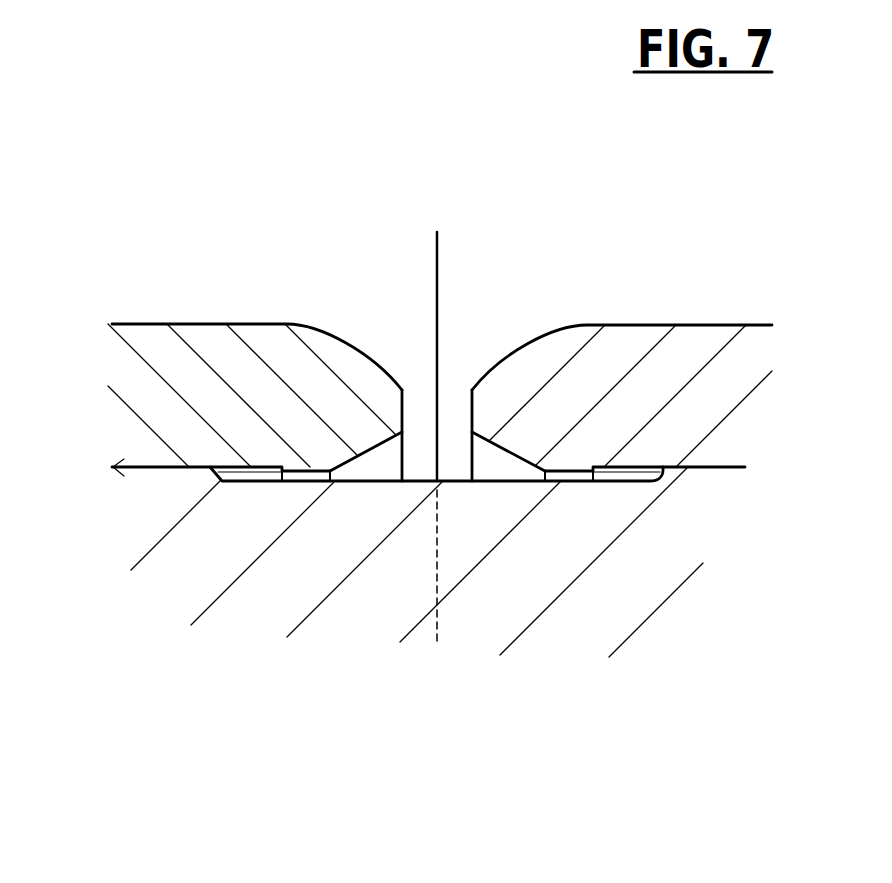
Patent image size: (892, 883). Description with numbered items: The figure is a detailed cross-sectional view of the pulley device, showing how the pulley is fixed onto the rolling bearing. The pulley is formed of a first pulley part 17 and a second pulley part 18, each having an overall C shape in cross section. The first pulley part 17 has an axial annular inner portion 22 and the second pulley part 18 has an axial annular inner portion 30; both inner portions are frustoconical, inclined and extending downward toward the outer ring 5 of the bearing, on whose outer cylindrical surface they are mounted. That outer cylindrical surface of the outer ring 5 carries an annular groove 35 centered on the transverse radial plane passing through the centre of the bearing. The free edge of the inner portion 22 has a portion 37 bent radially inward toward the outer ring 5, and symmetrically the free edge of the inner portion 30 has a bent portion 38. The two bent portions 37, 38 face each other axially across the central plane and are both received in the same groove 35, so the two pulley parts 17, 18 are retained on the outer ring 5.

The outer ring 5 is at (468, 612).
The first pulley part 17 is at (138, 318).
The second pulley part 18 is at (729, 318).
The axial annular inner portion 22 is at (213, 337).
The axial annular inner portion 30 is at (648, 340).
The annular groove 35 is at (433, 446).
The bent portion 37 is at (383, 398).
The bent portion 38 is at (474, 395).